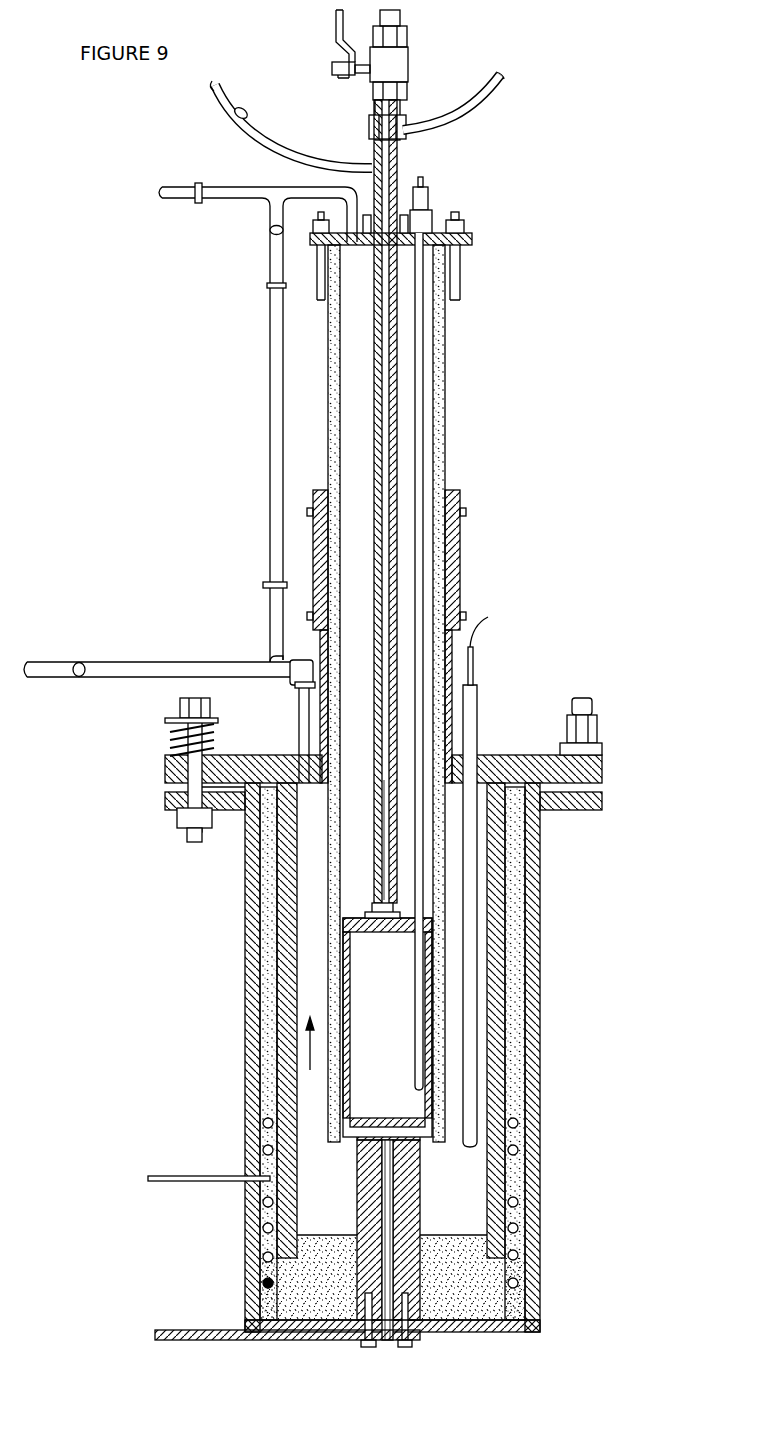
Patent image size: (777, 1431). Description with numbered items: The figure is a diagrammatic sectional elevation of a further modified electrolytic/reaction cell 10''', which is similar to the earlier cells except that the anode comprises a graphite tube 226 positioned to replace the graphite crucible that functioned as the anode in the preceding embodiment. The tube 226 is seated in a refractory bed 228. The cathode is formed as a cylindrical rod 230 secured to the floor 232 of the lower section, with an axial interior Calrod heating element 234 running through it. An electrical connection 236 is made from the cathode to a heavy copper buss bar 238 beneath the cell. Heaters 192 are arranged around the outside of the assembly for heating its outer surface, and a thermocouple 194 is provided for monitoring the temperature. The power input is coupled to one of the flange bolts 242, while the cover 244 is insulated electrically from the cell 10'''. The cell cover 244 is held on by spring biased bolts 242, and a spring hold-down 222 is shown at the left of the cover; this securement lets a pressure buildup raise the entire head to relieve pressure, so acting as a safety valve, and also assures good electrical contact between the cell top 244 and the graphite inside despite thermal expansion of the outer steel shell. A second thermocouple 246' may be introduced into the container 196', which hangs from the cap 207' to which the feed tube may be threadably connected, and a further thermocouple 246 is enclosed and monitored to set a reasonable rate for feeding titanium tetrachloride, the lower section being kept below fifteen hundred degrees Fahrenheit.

The electrolytic/reaction cell 10''' is at (578, 639).
The heaters 192 is at (515, 1130).
The thermocouple 194 is at (207, 1176).
The container 196' is at (387, 1027).
The cap 207' is at (294, 899).
The spring loaded bolt 222 is at (162, 735).
The graphite tube 226 is at (288, 995).
The refractory bed 228 is at (507, 1303).
The cylindrical rod 230 is at (403, 1225).
The floor 232 is at (530, 1314).
The Calrod heating element 234 is at (387, 1198).
The electrical connection 236 is at (388, 1337).
The copper buss bar 238 is at (207, 1330).
The flange bolts 242 is at (594, 730).
The cover 244 is at (537, 755).
The thermocouple 246 is at (493, 882).
The second thermocouple 246' is at (467, 661).